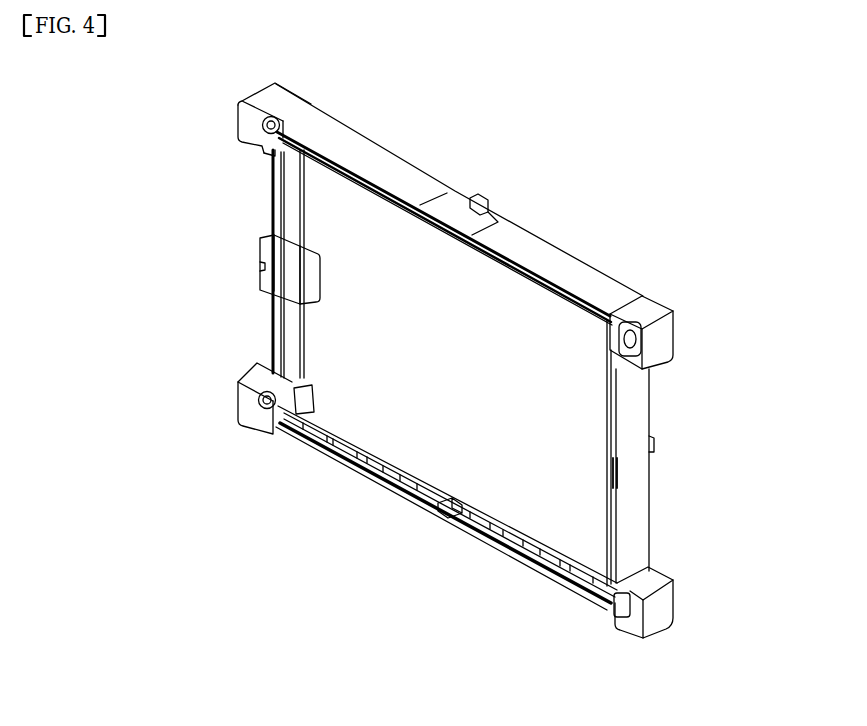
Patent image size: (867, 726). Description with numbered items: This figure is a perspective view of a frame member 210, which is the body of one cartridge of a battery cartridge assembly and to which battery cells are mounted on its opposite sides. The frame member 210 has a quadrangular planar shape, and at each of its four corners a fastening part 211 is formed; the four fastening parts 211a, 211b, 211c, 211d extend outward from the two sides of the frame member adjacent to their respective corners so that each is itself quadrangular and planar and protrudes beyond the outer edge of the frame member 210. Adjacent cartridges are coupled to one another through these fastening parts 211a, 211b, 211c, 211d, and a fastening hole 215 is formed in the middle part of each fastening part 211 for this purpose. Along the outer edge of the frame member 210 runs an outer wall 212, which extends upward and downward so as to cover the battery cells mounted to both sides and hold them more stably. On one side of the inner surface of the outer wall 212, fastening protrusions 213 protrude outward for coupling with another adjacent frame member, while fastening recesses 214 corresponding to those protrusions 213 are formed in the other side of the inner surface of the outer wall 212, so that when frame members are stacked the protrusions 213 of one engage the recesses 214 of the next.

The frame member 210 is at (80, 125).
The fastening part 211 is at (397, 661).
The fastening part 211a is at (258, 152).
The fastening part 211b is at (238, 410).
The fastening part 211c is at (609, 350).
The fastening part 211d is at (613, 623).
The outer wall 212 is at (537, 252).
The fastening protrusion 213 is at (482, 200).
The fastening recess 214 is at (437, 225).
The fastening hole 215 is at (264, 406).